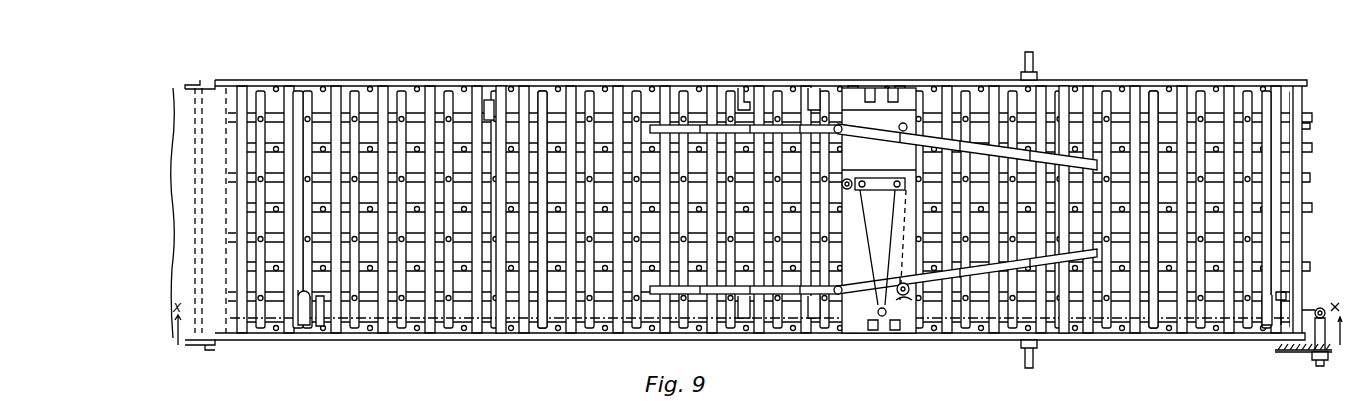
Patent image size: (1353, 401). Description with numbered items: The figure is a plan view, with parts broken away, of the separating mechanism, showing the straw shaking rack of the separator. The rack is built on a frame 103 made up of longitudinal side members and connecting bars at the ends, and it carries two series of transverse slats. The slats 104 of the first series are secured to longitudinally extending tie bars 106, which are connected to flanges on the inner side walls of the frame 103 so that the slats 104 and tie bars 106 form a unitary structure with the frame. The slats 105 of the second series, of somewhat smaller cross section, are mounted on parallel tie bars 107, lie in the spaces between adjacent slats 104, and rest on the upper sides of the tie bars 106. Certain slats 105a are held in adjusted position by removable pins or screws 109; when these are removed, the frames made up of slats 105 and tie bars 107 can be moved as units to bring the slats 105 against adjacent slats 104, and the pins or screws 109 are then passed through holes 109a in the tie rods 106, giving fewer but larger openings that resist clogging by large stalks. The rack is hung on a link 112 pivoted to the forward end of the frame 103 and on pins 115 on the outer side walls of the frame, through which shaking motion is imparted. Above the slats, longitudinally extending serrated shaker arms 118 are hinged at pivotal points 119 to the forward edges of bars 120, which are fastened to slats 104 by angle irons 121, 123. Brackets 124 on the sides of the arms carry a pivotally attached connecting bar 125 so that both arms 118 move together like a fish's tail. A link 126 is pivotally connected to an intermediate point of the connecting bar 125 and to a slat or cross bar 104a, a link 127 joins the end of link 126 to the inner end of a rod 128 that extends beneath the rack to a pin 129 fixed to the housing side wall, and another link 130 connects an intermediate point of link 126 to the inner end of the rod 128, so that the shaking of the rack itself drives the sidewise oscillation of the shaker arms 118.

The frame 103 is at (418, 87).
The slats 104 is at (1064, 90).
The slat or cross bar 104a is at (870, 100).
The slats 105 is at (545, 92).
The slats 105a is at (298, 93).
The tie bars 106 is at (490, 100).
The tie bars 107 is at (1308, 126).
The removable pins or screws 109 is at (302, 328).
The holes 109a is at (321, 327).
The link 112 is at (214, 88).
The pins 115 is at (1034, 60).
The shaker arms 118 is at (975, 140).
The pivotal point 119 is at (845, 124).
The bars or arms 120 is at (770, 125).
The angle iron 121 is at (745, 95).
The angle iron 123 is at (814, 95).
The brackets 124 is at (905, 122).
The connecting bar 125 is at (852, 179).
The link 126 is at (884, 178).
The link 127 is at (905, 297).
The rod 128 is at (1117, 310).
The pin 129 is at (1320, 362).
The link 130 is at (879, 318).